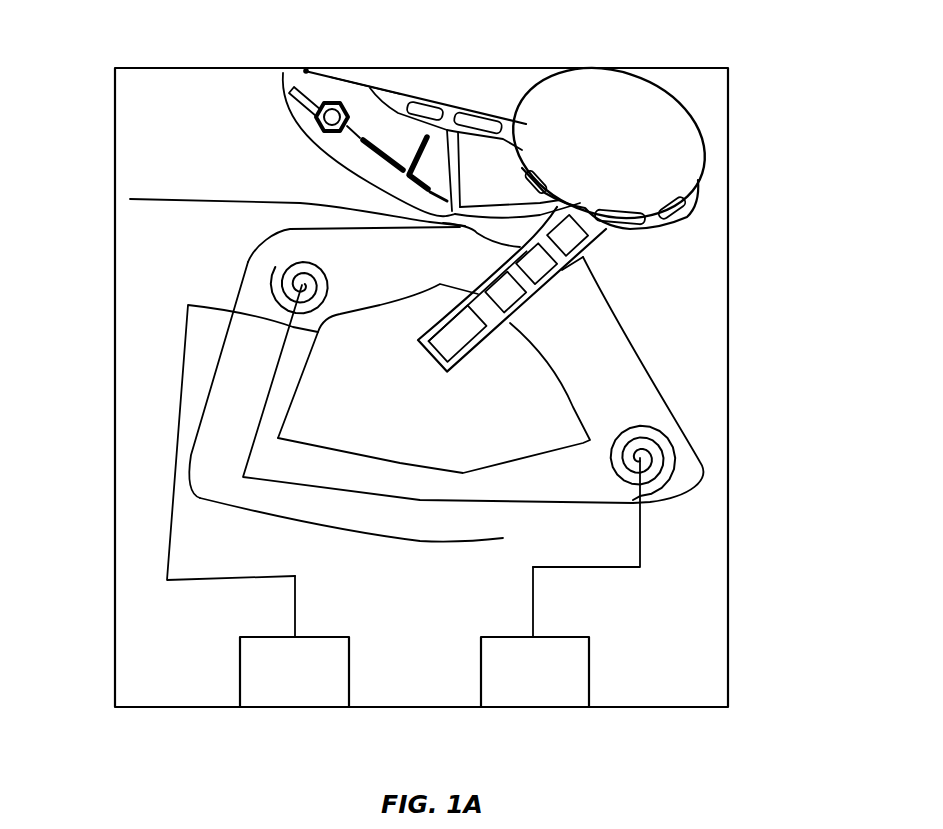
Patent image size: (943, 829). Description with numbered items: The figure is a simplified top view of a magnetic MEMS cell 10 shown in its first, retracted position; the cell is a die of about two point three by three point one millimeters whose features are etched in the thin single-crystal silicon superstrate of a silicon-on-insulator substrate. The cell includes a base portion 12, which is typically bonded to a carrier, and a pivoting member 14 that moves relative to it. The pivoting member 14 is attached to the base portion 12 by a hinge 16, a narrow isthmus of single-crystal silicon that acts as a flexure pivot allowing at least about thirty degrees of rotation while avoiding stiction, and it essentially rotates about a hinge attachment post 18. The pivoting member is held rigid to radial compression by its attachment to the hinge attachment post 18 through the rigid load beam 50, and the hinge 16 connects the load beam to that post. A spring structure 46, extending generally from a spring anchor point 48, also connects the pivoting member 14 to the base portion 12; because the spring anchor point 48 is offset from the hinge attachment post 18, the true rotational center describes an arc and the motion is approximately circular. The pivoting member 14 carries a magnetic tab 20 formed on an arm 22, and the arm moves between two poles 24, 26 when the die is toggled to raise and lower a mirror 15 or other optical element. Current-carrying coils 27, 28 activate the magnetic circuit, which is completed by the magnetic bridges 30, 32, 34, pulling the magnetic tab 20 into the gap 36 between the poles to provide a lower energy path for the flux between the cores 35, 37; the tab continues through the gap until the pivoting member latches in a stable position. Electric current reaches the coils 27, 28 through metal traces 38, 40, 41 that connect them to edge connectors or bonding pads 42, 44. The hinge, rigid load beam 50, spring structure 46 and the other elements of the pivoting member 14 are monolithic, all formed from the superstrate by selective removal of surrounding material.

The magnetic MEMS cell 10 is at (746, 110).
The base portion 12 is at (728, 383).
The pivoting member 14 is at (479, 92).
The mirror 15 is at (663, 87).
The hinge 16 is at (354, 80).
The hinge attachment post 18 is at (305, 70).
The magnetic tab 20 is at (463, 355).
The arm 22 is at (578, 242).
The pole 24 is at (130, 199).
The pole 26 is at (600, 293).
The current-carrying coil 27 is at (273, 282).
The current-carrying coil 28 is at (707, 470).
The magnetic bridge 30 is at (191, 447).
The magnetic bridge 32 is at (503, 538).
The magnetic bridge 34 is at (690, 427).
The core 35 is at (290, 229).
The gap 36 is at (587, 256).
The core 37 is at (624, 340).
The metal trace 38 is at (168, 538).
The metal trace 40 is at (533, 503).
The metal trace 41 is at (643, 548).
The bonding pad 42 is at (290, 709).
The bonding pad 44 is at (537, 709).
The spring structure 46 is at (362, 156).
The spring anchor point 48 is at (313, 117).
The rigid load beam 50 is at (417, 94).